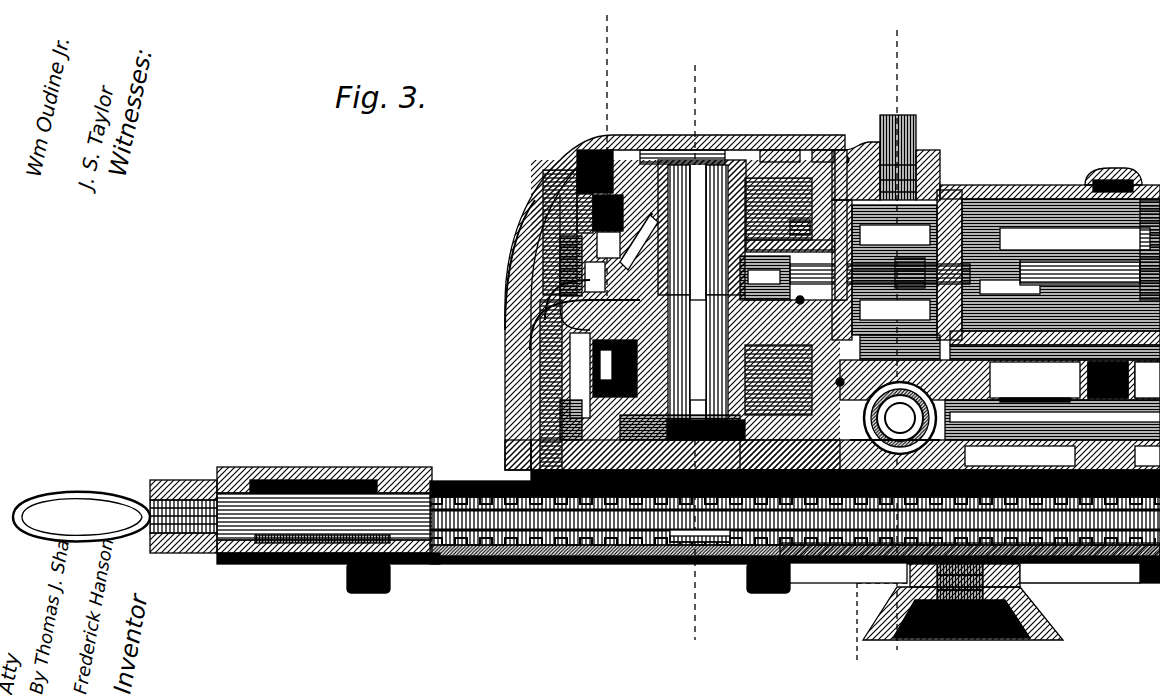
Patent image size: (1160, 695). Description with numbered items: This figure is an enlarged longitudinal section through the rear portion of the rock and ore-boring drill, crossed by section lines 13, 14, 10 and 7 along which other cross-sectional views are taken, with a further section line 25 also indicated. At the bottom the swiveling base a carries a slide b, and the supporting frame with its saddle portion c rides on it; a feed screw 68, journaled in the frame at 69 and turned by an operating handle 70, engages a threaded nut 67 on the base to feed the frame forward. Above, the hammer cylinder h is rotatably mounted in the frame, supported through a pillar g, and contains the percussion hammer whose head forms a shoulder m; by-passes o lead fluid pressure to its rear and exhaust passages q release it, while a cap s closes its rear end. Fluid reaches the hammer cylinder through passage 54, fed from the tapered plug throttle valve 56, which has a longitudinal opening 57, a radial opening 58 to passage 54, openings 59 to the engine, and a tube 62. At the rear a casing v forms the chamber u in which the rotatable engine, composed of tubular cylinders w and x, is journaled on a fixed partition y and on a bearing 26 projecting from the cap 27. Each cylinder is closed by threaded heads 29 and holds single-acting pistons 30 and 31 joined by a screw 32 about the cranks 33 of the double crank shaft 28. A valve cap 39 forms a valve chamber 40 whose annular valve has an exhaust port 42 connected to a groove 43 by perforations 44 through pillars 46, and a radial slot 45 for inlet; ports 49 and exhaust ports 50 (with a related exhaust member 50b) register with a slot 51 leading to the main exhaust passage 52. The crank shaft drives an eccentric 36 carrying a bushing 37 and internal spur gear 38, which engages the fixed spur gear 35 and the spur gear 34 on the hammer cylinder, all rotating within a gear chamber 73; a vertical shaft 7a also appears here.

The section line 13 is at (628, 33).
The section line 14 is at (645, 88).
The section line 10 is at (723, 98).
The section line 7 is at (950, 35).
The cap 27 is at (560, 150).
The ports 49 is at (650, 150).
The threaded heads 29 is at (708, 160).
The single-acting piston 30 is at (706, 367).
The bearing 26 is at (688, 375).
The chamber u is at (775, 150).
The casing v is at (822, 148).
The fixed partition y is at (850, 98).
The internal spur gear 38 is at (860, 150).
The vertical shaft 7a is at (912, 150).
The cap s is at (965, 205).
The by-passes o is at (1048, 200).
The exhaust passages q is at (1115, 178).
The hammer cylinder h is at (1145, 198).
The radial slot 45 is at (560, 180).
The perforations 44 is at (520, 210).
The pillars 46 is at (540, 325).
The groove 43 is at (560, 350).
The exhaust port 42 is at (545, 385).
The main exhaust passage 52 is at (520, 458).
The valve cap 39 is at (570, 275).
The slot 51 is at (596, 277).
The exhaust ports 50 is at (639, 237).
The lower valve 50b is at (625, 368).
The single-acting piston 31 is at (795, 200).
The tubular cylinder x is at (792, 228).
The tubular cylinder w is at (778, 380).
The cranks 33 is at (765, 278).
The screw 32 is at (810, 298).
The double crank shaft 28 is at (880, 286).
The fixed spur gear 35 is at (894, 270).
The spur gear 34 is at (910, 272).
The bushing 37 is at (948, 265).
The eccentric 36 is at (900, 347).
The gear chamber 73 is at (935, 372).
The radial opening 58 is at (1052, 406).
The tube 62 is at (848, 383).
The longitudinal tubular opening 57 is at (900, 418).
The tapered plug throttle valve 56 is at (858, 448).
The passage 54 is at (1035, 387).
The pillar g is at (1085, 378).
The shoulder m is at (1147, 380).
The radial openings 59 is at (790, 455).
The valve chamber 40 is at (580, 427).
The section line 25 is at (681, 436).
The feed screw 68 is at (510, 548).
The saddle portion c is at (672, 548).
The journal 69 is at (300, 548).
The operating handle 70 is at (90, 500).
The threaded nut 67 is at (1100, 563).
The swiveling base a is at (1063, 636).
The slide b is at (840, 565).